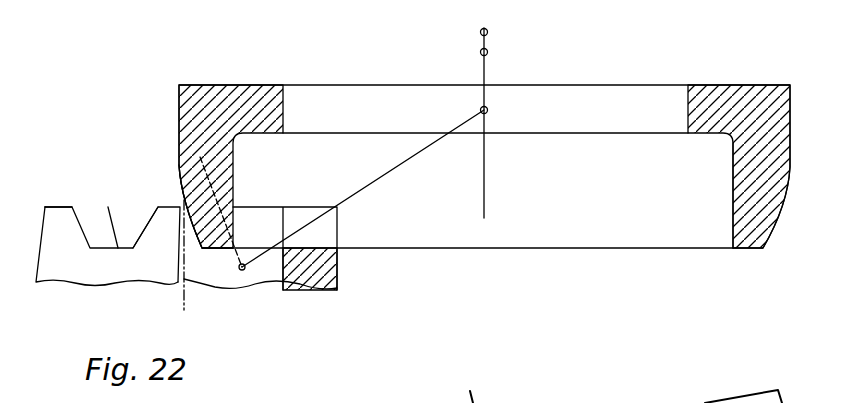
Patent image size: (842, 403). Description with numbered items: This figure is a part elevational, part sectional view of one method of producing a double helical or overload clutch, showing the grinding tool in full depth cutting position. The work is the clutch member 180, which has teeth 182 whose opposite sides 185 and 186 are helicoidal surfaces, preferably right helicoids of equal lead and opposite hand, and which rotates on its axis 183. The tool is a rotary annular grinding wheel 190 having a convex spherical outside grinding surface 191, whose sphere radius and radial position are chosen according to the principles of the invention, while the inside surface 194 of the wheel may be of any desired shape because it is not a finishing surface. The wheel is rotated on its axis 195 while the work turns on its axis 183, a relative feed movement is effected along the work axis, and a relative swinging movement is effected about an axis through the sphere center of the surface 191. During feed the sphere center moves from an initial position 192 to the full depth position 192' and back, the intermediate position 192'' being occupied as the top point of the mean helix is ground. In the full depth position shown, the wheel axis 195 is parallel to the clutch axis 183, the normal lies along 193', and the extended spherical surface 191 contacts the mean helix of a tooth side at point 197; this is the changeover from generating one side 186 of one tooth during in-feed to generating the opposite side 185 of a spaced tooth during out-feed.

The clutch member 180 is at (125, 268).
The teeth 182 is at (57, 215).
The axis of the clutch member 183 is at (186, 298).
The side tooth surface 185 is at (93, 220).
The side tooth surface 186 is at (148, 220).
The annular grinding wheel 190 is at (565, 240).
The convex spherical outside grinding surface 191 is at (193, 244).
The initial position of sphere center 192 is at (505, 24).
The sphere center position 192'' is at (508, 53).
The full depth position of sphere center 192' is at (507, 105).
The normal 193' is at (363, 188).
The inside surface of the wheel 194 is at (733, 235).
The wheel axis 195 is at (486, 186).
The contact point 197 is at (242, 271).